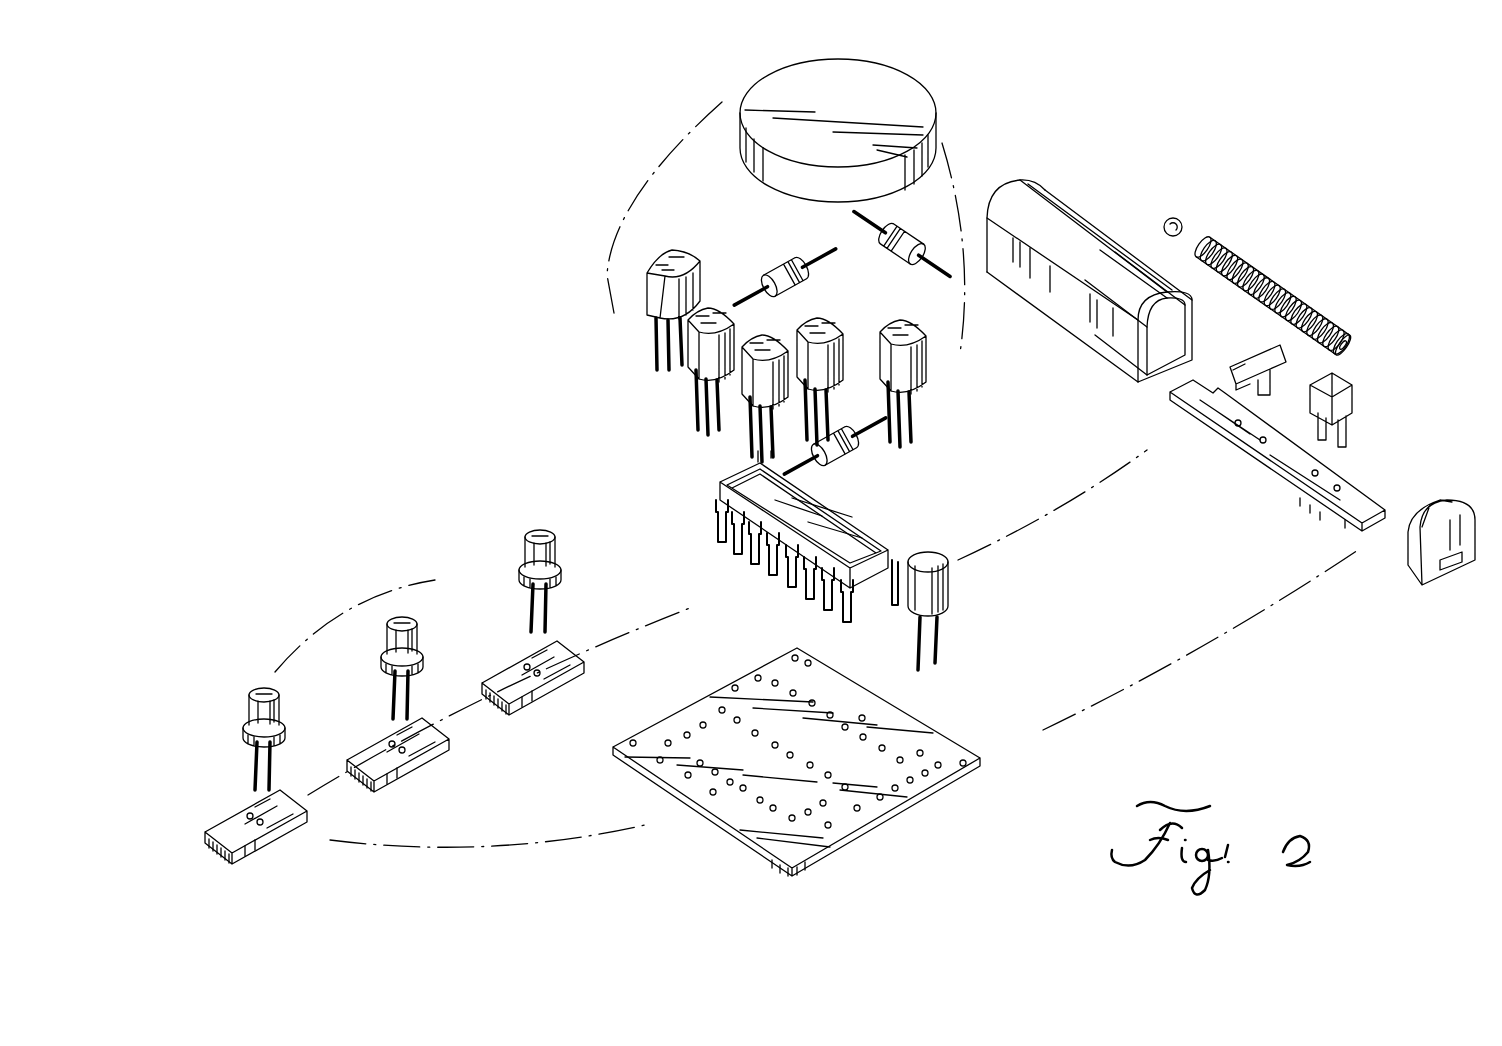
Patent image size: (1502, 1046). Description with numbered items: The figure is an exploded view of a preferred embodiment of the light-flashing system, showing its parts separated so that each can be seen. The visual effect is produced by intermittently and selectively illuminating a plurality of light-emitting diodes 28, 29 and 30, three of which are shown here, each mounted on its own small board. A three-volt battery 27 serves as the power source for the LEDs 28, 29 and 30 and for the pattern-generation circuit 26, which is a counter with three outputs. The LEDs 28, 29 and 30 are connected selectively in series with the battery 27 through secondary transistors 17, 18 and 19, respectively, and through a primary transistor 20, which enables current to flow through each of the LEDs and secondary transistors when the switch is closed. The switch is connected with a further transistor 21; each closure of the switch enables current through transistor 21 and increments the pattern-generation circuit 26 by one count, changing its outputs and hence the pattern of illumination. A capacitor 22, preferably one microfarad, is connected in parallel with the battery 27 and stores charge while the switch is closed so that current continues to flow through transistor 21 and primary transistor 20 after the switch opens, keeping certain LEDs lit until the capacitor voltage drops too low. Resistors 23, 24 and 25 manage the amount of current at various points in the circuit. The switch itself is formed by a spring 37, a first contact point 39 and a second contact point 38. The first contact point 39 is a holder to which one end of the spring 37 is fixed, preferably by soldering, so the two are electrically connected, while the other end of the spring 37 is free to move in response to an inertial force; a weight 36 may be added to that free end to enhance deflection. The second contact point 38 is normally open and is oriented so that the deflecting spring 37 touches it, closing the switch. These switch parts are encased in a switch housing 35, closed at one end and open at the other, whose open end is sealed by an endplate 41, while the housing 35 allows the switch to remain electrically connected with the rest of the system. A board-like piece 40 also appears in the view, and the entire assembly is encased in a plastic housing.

The secondary transistor 17 is at (672, 250).
The secondary transistor 18 is at (708, 308).
The secondary transistor 19 is at (760, 336).
The primary transistor 20 is at (827, 318).
The transistor 21 is at (912, 318).
The capacitor 22 is at (937, 553).
The resistor 23 is at (850, 455).
The resistor 24 is at (905, 232).
The resistor 25 is at (778, 262).
The pattern-generation circuit 26 is at (867, 538).
The battery 27 is at (920, 98).
The light-emitting diode 28 is at (552, 530).
The light-emitting diode 29 is at (417, 627).
The light-emitting diode 30 is at (255, 690).
The switch housing 35 is at (1048, 195).
The weight 36 is at (1182, 222).
The spring 37 is at (1310, 300).
The second contact point 38 is at (1257, 350).
The first contact point 39 is at (1353, 403).
The circuit board strip 40 is at (1270, 483).
The endplate 41 is at (1450, 457).